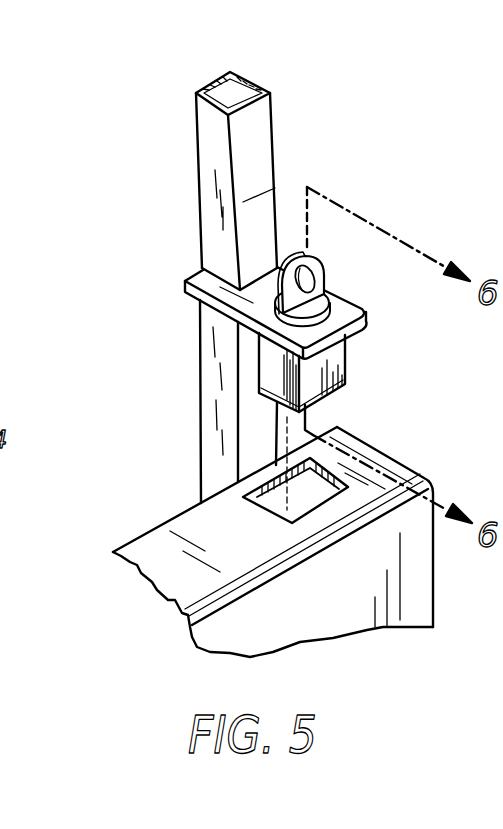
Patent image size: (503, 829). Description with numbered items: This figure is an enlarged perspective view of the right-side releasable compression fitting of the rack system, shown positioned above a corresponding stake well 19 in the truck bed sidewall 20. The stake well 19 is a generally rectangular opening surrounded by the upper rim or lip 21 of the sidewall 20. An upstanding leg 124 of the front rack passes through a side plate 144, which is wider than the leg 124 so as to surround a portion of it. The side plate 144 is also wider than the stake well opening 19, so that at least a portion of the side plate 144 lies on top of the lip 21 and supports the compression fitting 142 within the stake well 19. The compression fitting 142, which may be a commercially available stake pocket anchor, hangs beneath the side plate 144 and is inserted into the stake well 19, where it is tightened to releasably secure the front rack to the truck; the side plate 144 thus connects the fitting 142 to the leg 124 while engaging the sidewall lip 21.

The leg 124 is at (277, 168).
The compression fitting 142 is at (378, 377).
The side plate 144 is at (338, 302).
The stake well 19 is at (243, 520).
The sidewall 20 is at (313, 597).
The lip 21 is at (143, 537).